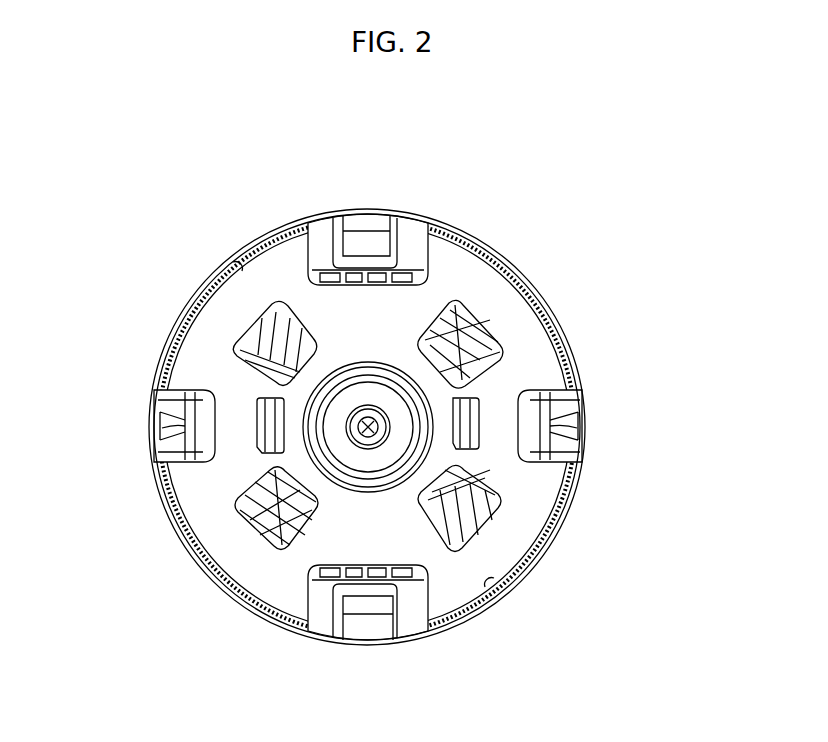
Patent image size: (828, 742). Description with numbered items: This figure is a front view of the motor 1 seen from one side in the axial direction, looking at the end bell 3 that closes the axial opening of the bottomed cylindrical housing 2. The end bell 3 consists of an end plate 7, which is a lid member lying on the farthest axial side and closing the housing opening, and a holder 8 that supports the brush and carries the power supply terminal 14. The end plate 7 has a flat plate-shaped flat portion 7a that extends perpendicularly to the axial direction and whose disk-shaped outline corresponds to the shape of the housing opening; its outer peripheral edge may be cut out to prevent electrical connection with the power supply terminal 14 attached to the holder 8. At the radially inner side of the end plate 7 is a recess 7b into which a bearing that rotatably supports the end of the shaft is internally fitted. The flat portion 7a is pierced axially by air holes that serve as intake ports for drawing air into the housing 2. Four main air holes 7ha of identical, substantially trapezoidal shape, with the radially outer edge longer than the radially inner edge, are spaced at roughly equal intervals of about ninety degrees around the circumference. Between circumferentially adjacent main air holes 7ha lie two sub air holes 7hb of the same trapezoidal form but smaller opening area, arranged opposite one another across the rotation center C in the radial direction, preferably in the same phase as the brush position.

The motor 1 is at (376, 410).
The housing 2 is at (93, 276).
The end bell 3 is at (550, 323).
The end plate 7 is at (542, 362).
The flat portion 7a is at (358, 547).
The recess 7b is at (360, 365).
The main air hole 7ha is at (565, 552).
The sub air hole 7hb is at (256, 398).
The holder 8 is at (412, 250).
The power supply terminal 14 is at (182, 430).
The rotation center C is at (376, 434).